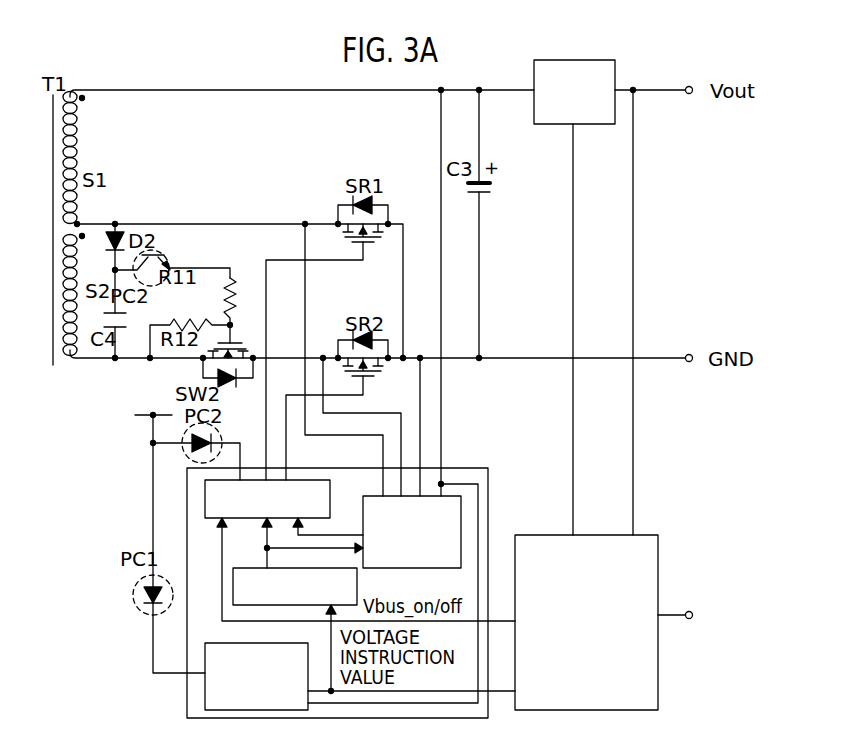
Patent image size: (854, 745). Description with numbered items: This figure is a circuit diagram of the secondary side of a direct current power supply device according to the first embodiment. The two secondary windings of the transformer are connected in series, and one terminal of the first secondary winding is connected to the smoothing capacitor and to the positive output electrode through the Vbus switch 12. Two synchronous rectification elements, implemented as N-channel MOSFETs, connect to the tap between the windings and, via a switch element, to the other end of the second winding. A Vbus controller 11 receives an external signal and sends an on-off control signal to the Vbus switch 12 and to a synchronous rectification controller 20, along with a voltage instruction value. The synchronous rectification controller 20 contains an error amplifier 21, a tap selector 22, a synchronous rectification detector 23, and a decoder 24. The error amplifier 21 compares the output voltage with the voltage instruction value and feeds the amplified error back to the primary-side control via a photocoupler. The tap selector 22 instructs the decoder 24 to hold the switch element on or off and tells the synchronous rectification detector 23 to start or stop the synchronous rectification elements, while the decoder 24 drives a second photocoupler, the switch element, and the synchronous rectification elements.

The Vbus controller 11 is at (659, 540).
The Vbus switch 12 is at (553, 125).
The synchronous rectification controller 20 is at (469, 468).
The error amplifier 21 is at (212, 643).
The tap selector 22 is at (243, 568).
The synchronous rectification detector 23 is at (402, 569).
The decoder 24 is at (333, 505).